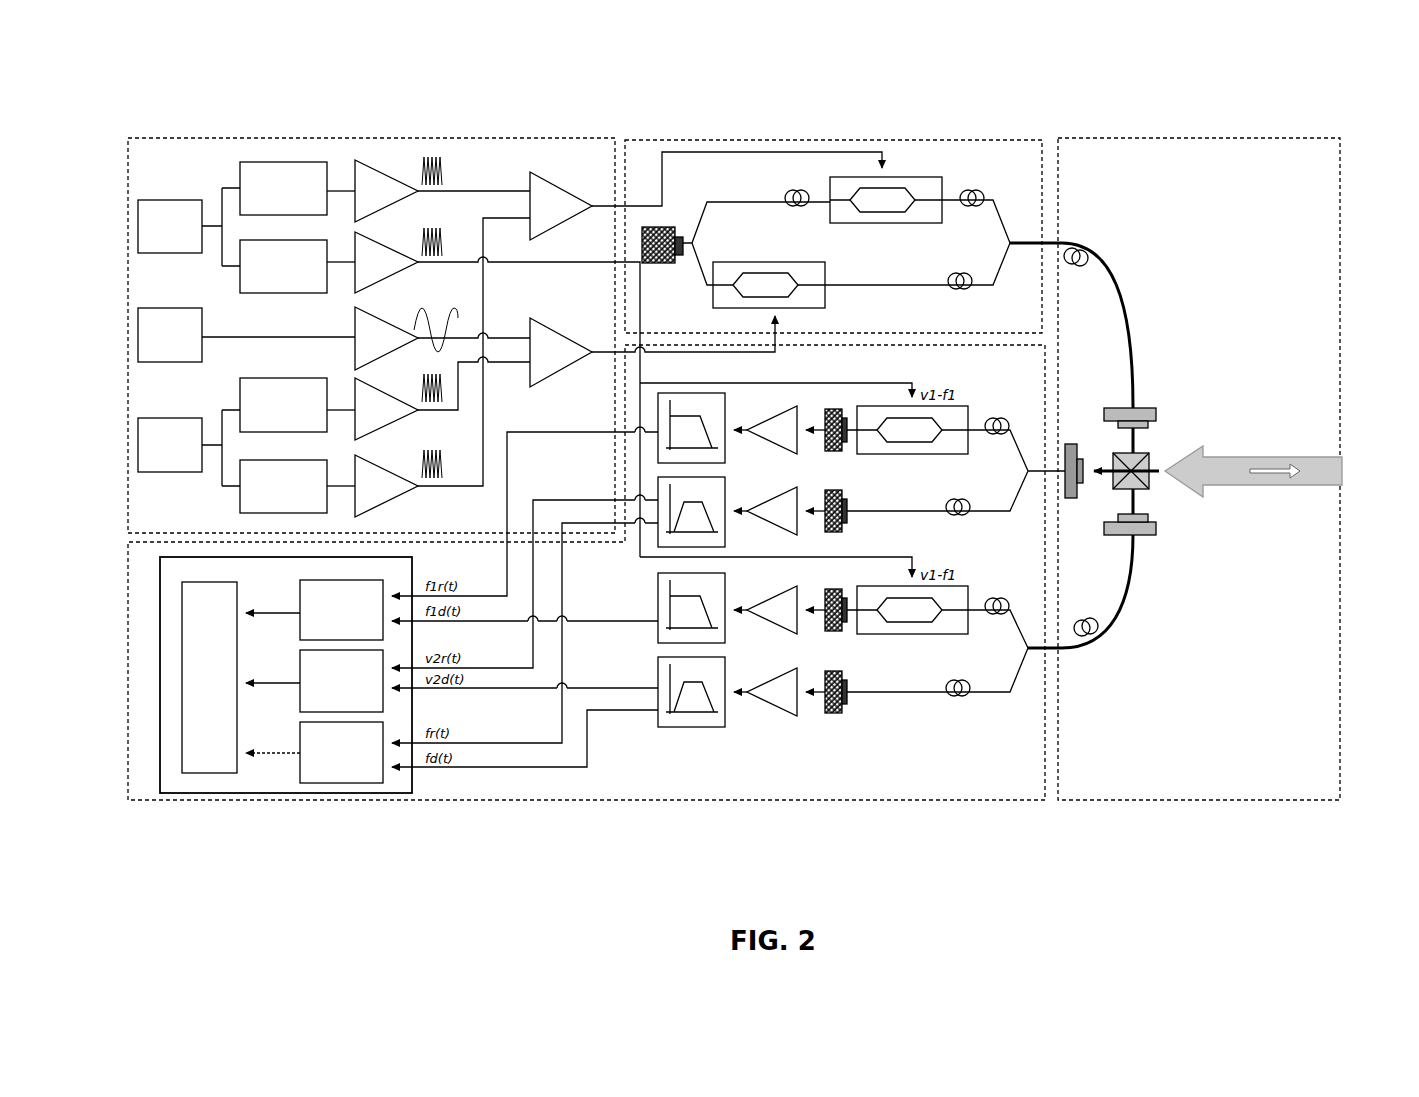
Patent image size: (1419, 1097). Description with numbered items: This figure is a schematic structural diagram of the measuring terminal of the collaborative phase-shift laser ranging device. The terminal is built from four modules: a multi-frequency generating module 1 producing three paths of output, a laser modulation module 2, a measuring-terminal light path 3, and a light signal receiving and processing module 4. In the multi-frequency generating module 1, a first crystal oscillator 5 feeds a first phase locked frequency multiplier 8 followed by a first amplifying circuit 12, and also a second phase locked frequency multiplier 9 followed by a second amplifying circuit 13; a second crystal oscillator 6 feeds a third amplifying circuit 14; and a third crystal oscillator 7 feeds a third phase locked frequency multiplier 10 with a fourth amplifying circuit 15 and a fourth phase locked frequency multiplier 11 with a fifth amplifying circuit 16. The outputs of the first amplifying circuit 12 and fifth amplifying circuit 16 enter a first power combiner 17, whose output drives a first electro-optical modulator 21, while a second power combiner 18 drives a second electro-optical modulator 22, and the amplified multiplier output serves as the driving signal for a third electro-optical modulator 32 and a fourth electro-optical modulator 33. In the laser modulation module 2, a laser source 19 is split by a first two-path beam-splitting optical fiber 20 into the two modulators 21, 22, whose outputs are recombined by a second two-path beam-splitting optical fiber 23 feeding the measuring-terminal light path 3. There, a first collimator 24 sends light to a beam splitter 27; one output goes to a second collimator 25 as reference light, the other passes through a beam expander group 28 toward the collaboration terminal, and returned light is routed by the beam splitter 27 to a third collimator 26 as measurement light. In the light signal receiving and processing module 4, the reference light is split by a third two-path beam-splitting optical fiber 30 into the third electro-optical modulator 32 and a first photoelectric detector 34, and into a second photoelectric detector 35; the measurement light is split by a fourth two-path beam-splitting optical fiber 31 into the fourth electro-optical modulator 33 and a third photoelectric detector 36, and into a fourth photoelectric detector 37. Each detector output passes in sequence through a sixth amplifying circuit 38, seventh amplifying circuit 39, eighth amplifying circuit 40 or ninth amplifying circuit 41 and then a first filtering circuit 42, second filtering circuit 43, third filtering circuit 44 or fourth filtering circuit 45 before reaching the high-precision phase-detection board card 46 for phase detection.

The multi-frequency generating module 1 is at (128, 140).
The laser modulation module 2 is at (665, 227).
The measuring-terminal light path 3 is at (1258, 138).
The light signal receiving and processing module 4 is at (128, 735).
The first crystal oscillator 5 is at (138, 225).
The second crystal oscillator 6 is at (138, 335).
The third crystal oscillator 7 is at (138, 445).
The first phase locked frequency multiplier 8 is at (240, 195).
The second phase locked frequency multiplier 9 is at (240, 262).
The third phase locked frequency multiplier 10 is at (240, 395).
The fourth phase locked frequency multiplier 11 is at (240, 485).
The first amplifying circuit 12 is at (378, 162).
The second amplifying circuit 13 is at (352, 222).
The third amplifying circuit 14 is at (355, 340).
The fourth amplifying circuit 15 is at (392, 423).
The fifth amplifying circuit 16 is at (387, 503).
The first power combiner 17 is at (540, 180).
The second power combiner 18 is at (568, 335).
The laser source 19 is at (731, 200).
The first two-path beam-splitting optical fiber 20 is at (758, 260).
The first electro-optical modulator 21 is at (853, 177).
The second electro-optical modulator 22 is at (802, 192).
The second two-path beam-splitting optical fiber 23 is at (1046, 240).
The first collimator 24 is at (1156, 410).
The second collimator 25 is at (1071, 444).
The third collimator 26 is at (1156, 530).
The beam splitter 27 is at (1149, 455).
The beam expander group 28 is at (1178, 450).
The third two-path beam-splitting optical fiber 30 is at (1012, 520).
The fourth two-path beam-splitting optical fiber 31 is at (987, 697).
The third electro-optical modulator 32 is at (968, 406).
The fourth electro-optical modulator 33 is at (927, 668).
The first photoelectric detector 34 is at (842, 413).
The second photoelectric detector 35 is at (827, 483).
The third photoelectric detector 36 is at (847, 627).
The fourth photoelectric detector 37 is at (840, 715).
The sixth amplifying circuit 38 is at (787, 406).
The seventh amplifying circuit 39 is at (777, 487).
The eighth amplifying circuit 40 is at (797, 634).
The ninth amplifying circuit 41 is at (783, 712).
The first filtering circuit 42 is at (680, 397).
The second filtering circuit 43 is at (655, 470).
The third filtering circuit 44 is at (660, 645).
The fourth filtering circuit 45 is at (673, 728).
The high-precision phase-detection board card 46 is at (178, 792).